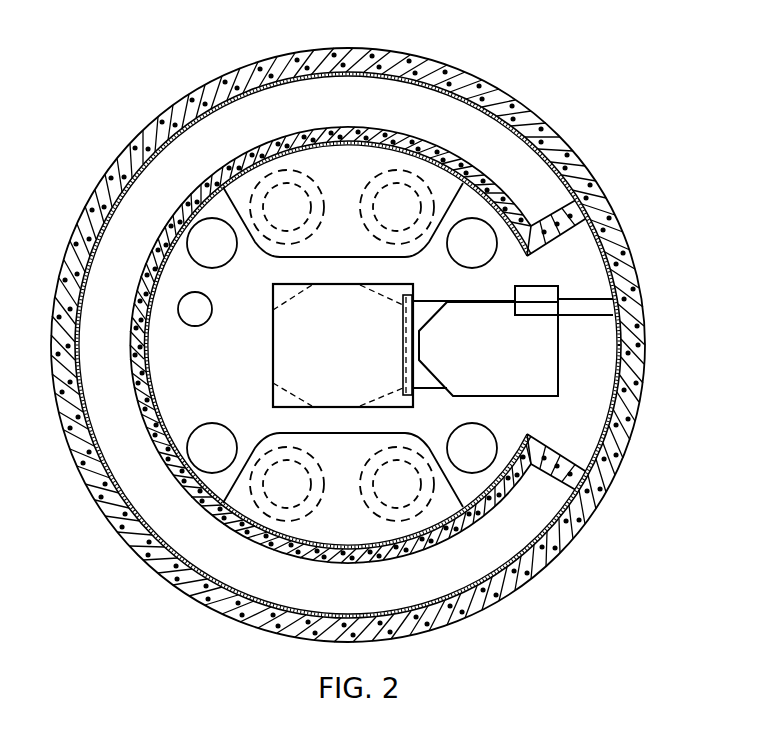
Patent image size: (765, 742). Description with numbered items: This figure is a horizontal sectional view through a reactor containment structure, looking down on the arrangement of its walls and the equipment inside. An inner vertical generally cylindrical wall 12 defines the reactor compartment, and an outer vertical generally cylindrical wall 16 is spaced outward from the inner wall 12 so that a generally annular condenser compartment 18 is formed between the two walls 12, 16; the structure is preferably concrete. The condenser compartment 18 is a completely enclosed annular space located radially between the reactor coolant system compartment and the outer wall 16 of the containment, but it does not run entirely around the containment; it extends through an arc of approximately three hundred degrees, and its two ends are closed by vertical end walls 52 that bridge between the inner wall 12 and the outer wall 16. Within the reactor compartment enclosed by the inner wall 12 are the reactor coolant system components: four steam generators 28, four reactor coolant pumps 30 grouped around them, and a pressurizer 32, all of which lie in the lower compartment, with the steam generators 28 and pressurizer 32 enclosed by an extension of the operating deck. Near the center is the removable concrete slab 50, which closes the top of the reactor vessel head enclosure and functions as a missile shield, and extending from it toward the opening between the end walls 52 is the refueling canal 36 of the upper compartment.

The inner vertical generally cylindrical wall 12 is at (143, 371).
The outer vertical generally cylindrical wall 16 is at (93, 480).
The condenser compartment 18 is at (150, 486).
The steam generators 28 is at (371, 190).
The reactor coolant pumps 30 is at (231, 257).
The pressurizer 32 is at (213, 309).
The refueling canal 36 is at (490, 300).
The removable concrete slab 50 is at (273, 350).
The vertical end walls 52 is at (572, 228).